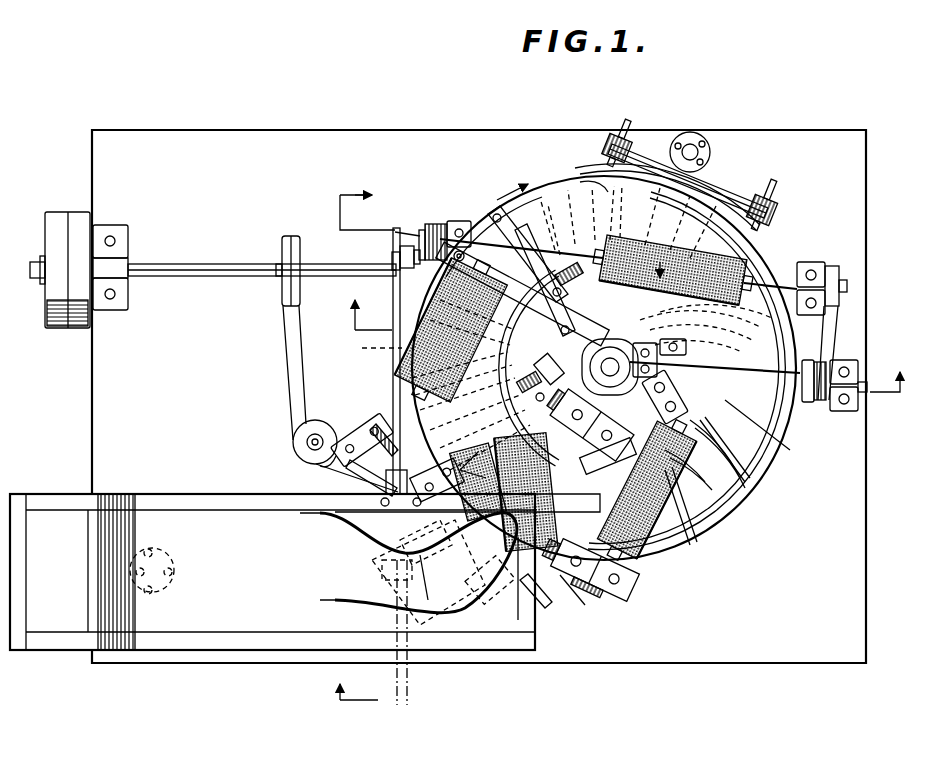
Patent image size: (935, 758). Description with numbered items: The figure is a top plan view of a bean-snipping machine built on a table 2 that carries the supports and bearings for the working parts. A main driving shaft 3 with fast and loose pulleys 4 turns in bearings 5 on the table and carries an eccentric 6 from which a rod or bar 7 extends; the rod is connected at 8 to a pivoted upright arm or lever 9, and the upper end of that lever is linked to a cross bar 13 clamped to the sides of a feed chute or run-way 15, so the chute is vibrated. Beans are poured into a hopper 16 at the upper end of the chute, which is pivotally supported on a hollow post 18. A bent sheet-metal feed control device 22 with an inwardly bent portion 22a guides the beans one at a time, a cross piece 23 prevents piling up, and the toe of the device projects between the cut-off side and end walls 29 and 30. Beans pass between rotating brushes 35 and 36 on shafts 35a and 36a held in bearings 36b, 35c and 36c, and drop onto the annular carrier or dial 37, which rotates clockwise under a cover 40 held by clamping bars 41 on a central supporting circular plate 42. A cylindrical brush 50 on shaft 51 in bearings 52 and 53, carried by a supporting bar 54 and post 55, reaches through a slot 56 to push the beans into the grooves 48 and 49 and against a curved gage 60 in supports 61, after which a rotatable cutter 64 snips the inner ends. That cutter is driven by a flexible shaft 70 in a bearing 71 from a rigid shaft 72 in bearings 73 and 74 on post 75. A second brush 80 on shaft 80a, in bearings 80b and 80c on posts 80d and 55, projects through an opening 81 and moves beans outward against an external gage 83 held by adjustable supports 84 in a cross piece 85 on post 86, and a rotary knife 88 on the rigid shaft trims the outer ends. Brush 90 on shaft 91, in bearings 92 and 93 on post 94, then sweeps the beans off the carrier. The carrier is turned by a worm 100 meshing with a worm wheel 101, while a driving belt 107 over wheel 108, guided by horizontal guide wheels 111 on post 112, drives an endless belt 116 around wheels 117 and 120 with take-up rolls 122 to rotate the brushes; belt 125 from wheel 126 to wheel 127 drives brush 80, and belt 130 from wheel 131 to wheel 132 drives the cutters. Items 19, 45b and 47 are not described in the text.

The table 2 is at (855, 633).
The main driving shaft 3 is at (170, 266).
The fast and loose pulleys 4 is at (88, 204).
The bearings 5 is at (124, 236).
The eccentric 6 is at (392, 258).
The rod or bar 7 is at (361, 447).
The connection 8 is at (630, 367).
The upright arm or lever 9 is at (425, 312).
The cross bar 13 is at (396, 666).
The feed chute or run-way 15 is at (272, 572).
The hopper 16 is at (56, 567).
The hollow post or standard 18 is at (170, 586).
The gear hub 19 is at (165, 556).
The feed control device 22 is at (372, 600).
The inwardly bent portion 22a is at (465, 620).
The cross piece 23 is at (372, 553).
The side wall 29 is at (436, 477).
The end wall 30 is at (528, 610).
The rotating brush 35 is at (585, 626).
The shaft 35a is at (565, 492).
The bearing 35c is at (560, 620).
The rotating brush 36 is at (485, 368).
The shaft 36a is at (471, 385).
The bearing 36b is at (589, 421).
The bearing 36c is at (418, 680).
The annular carrier or dial 37 is at (755, 475).
The cover 40 is at (786, 400).
The clamping bars 41 is at (500, 196).
The supporting circular plate 42 is at (665, 340).
The bearing 45b is at (622, 388).
The block 47 is at (556, 368).
The grooves 48 is at (720, 510).
The grooves 49 is at (765, 490).
The rotating cylindrical brush 50 is at (410, 360).
The shaft 51 is at (386, 424).
The bearing 52 is at (360, 428).
The bearing 53 is at (481, 225).
The supporting bar 54 is at (462, 200).
The post 55 is at (446, 220).
The slot 56 is at (400, 348).
The curved gage 60 is at (540, 372).
The supports 61 is at (565, 354).
The rotatable cutter 64 is at (584, 182).
The flexible shaft 70 is at (622, 345).
The bearing 71 is at (605, 222).
The rigid shaft 72 is at (740, 352).
The bearing 73 is at (720, 330).
The bearing 74 is at (858, 375).
The post 75 is at (850, 362).
The rotary cylindrical brush 80 is at (755, 262).
The shaft 80a is at (545, 200).
The bearing 80b is at (834, 266).
The bearing 80c is at (452, 222).
The post or standard 80d is at (848, 318).
The opening 81 is at (673, 261).
The external gage 83 is at (700, 190).
The adjustable supports 84 is at (612, 135).
The cross piece 85 is at (755, 200).
The post or standard 86 is at (705, 145).
The rotary knife or cutter 88 is at (840, 360).
The rotatable cylindrical brush 90 is at (655, 548).
The shaft 91 is at (630, 578).
The bearing 92 is at (720, 415).
The bearing 93 is at (622, 592).
The post 94 is at (605, 605).
The worm 100 is at (581, 219).
The worm wheel or gear 101 is at (712, 466).
The driving belt 107 is at (284, 354).
The driving wheel 108 is at (280, 292).
The horizontal guide wheels 111 is at (293, 437).
The post 112 is at (300, 456).
The endless belt 116 is at (345, 470).
The wheel 117 is at (600, 600).
The wheel 120 is at (360, 494).
The take-up rolls 122 is at (382, 570).
The endless driving belt 125 is at (424, 228).
The wheel 126 is at (398, 250).
The wheel 127 is at (340, 230).
The belt 130 is at (845, 320).
The wheel 131 is at (838, 270).
The wheel 132 is at (810, 404).